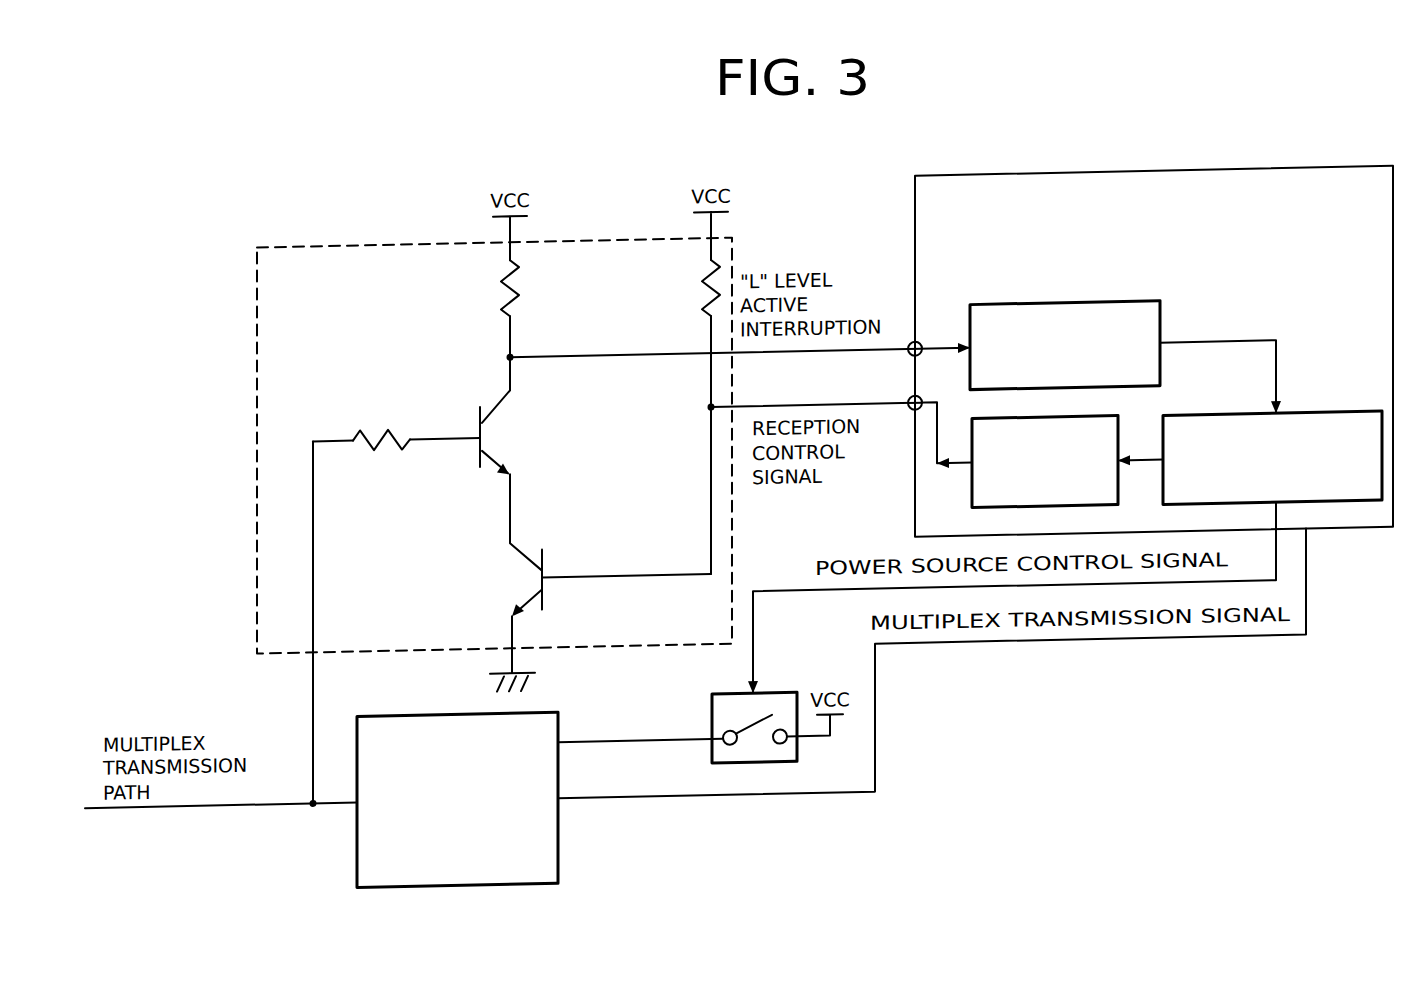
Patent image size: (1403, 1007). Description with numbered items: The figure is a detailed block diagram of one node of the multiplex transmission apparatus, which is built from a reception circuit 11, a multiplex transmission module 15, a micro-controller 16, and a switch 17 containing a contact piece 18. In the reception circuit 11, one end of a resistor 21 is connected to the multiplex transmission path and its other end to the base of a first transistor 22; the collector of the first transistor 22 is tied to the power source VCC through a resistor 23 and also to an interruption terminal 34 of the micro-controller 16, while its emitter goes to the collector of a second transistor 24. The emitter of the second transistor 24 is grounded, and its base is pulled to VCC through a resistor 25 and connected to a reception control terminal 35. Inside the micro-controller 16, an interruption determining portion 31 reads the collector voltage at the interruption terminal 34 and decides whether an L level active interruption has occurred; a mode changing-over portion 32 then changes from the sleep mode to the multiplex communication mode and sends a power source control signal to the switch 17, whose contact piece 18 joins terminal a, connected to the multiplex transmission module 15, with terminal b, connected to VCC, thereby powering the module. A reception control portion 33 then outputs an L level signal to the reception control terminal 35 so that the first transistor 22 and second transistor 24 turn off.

The reception circuit 11 is at (345, 253).
The multiplex transmission module 15 is at (560, 845).
The micro-controller 16 is at (1066, 194).
The switch 17 is at (756, 698).
The contact piece 18 is at (753, 739).
The resistor 21 is at (388, 438).
The first transistor 22 is at (478, 426).
The resistor 23 is at (520, 309).
The second transistor 24 is at (548, 568).
The resistor 25 is at (702, 312).
The interruption determining portion 31 is at (1061, 324).
The mode changing-over portion 32 is at (1323, 440).
The reception control portion 33 is at (972, 505).
The interruption terminal 34 is at (922, 362).
The reception control terminal 35 is at (908, 418).